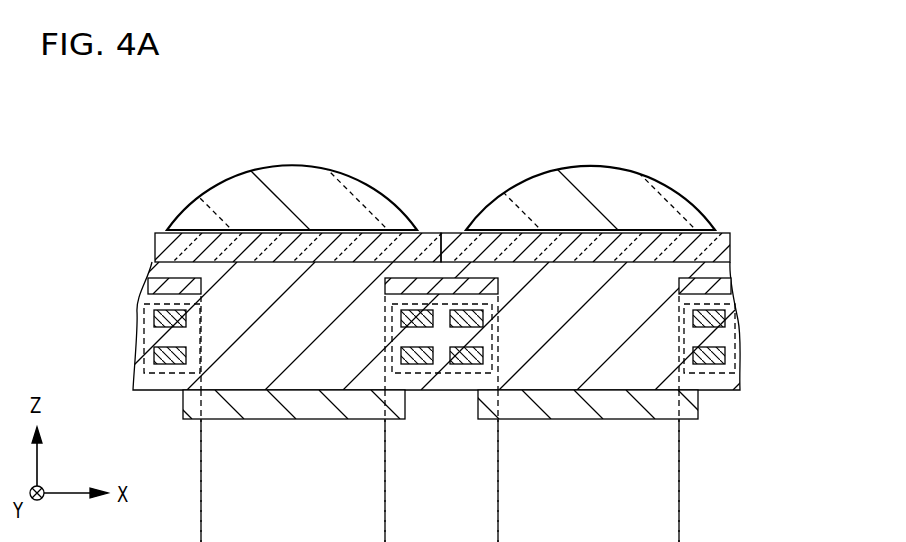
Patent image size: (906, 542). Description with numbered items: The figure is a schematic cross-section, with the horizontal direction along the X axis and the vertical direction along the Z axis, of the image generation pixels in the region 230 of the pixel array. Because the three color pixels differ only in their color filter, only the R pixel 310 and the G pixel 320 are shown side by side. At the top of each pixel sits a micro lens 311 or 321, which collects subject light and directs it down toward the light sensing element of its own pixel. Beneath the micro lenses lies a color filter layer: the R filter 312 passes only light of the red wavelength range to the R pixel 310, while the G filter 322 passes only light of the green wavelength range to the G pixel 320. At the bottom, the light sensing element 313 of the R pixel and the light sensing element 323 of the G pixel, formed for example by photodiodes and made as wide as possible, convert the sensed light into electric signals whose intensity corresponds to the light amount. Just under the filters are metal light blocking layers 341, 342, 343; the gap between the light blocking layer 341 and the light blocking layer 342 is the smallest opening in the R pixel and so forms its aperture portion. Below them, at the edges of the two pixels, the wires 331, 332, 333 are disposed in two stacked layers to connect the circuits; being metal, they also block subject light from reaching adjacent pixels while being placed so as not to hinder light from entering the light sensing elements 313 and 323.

The region 230 is at (132, 120).
The R pixel 310 is at (289, 149).
The micro lens 311 is at (247, 167).
The R filter 312 is at (155, 247).
The light sensing element 313 is at (272, 413).
The G pixel 320 is at (590, 150).
The micro lens 321 is at (629, 176).
The G filter 322 is at (729, 250).
The light sensing element 323 is at (582, 413).
The wires 331 is at (160, 377).
The wires 332 is at (443, 377).
The wires 333 is at (713, 377).
The light blocking layer 341 is at (148, 287).
The light blocking layer 342 is at (428, 280).
The light blocking layer 343 is at (731, 279).